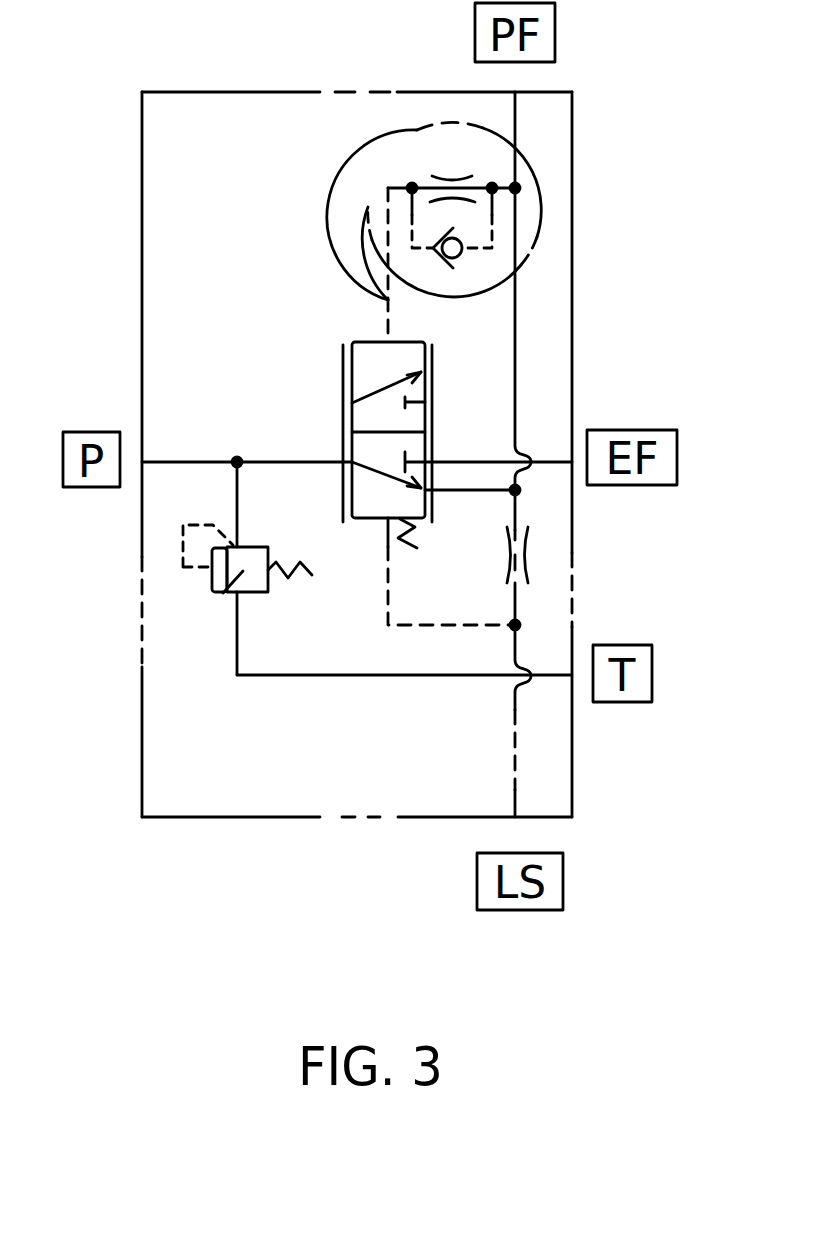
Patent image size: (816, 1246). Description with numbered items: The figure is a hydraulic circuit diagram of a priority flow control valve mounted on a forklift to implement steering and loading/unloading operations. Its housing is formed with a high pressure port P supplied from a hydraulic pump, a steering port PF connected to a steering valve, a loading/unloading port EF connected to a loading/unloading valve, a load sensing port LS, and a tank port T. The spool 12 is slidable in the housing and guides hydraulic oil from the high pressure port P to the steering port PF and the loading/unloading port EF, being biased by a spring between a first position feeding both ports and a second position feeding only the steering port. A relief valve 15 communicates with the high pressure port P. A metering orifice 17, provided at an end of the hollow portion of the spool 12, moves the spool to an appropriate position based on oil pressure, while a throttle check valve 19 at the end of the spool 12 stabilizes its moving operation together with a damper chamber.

The throttle check valve 19 is at (386, 160).
The spool 12 is at (367, 342).
The relief valve 15 is at (223, 593).
The metering orifice 17 is at (528, 538).